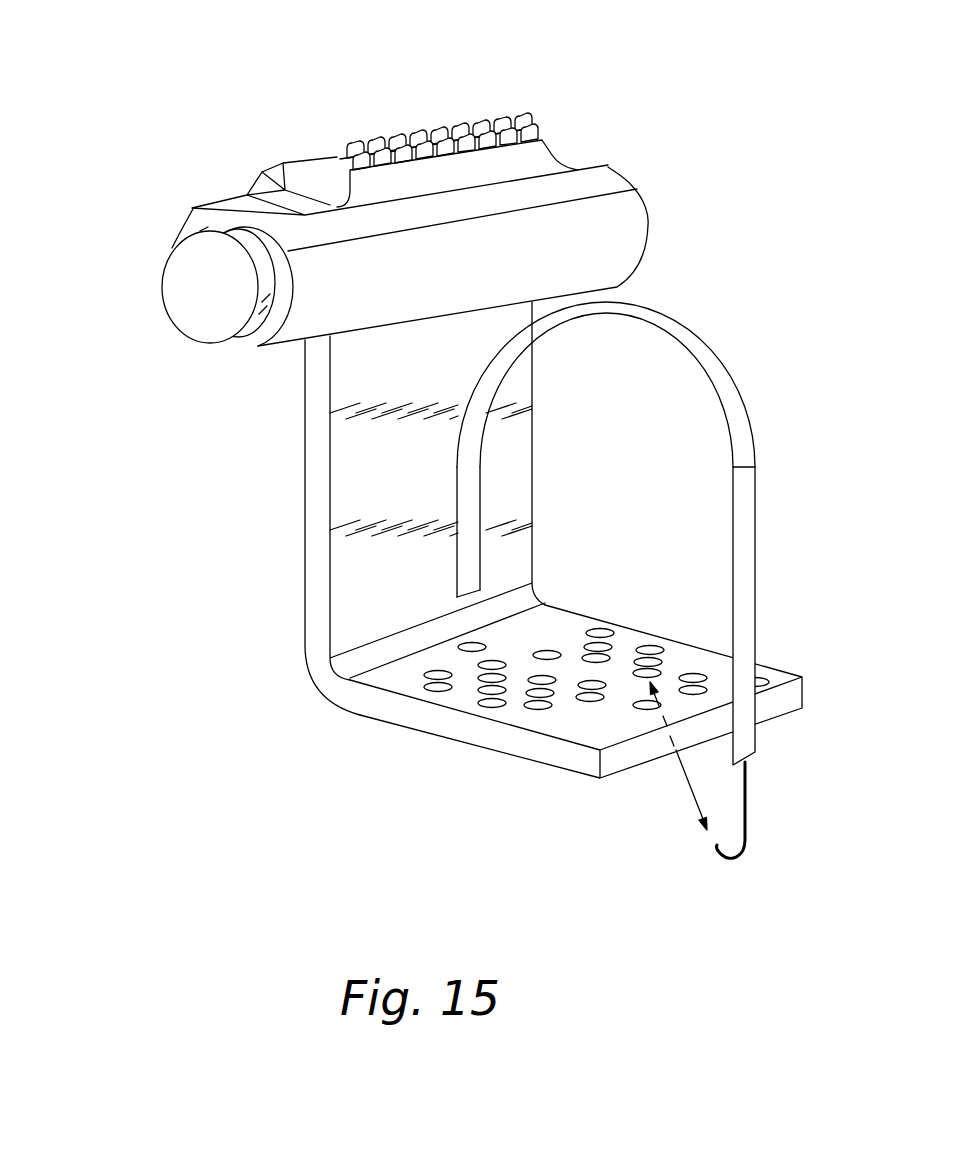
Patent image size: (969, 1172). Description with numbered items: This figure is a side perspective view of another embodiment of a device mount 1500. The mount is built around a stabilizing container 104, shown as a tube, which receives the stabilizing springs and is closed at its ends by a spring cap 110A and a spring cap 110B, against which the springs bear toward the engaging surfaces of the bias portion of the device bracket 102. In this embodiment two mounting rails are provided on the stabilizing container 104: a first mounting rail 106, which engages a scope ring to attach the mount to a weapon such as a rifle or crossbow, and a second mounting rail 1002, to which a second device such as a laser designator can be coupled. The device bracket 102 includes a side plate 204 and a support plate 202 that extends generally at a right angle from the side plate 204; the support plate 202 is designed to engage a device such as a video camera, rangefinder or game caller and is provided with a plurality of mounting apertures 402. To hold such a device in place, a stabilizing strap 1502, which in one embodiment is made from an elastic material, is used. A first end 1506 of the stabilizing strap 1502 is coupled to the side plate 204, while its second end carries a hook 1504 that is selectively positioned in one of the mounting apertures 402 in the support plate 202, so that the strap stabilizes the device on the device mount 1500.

The device mount 1500 is at (708, 83).
The device bracket 102 is at (308, 524).
The stabilizing container 104 is at (573, 164).
The mounting rail 106 is at (243, 190).
The spring cap 110A is at (648, 218).
The spring cap 110B is at (176, 275).
The support plate 202 is at (768, 667).
The side plate 204 is at (500, 462).
The mounting apertures 402 is at (694, 674).
The second mounting rail 1002 is at (556, 140).
The stabilizing strap 1502 is at (744, 406).
The hook 1504 is at (745, 826).
The first end 1506 is at (470, 586).